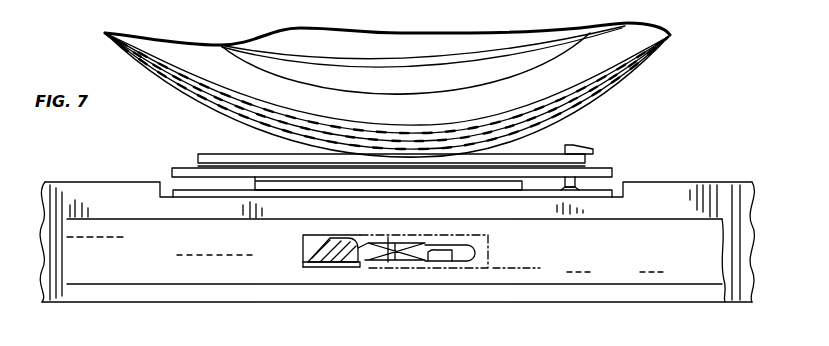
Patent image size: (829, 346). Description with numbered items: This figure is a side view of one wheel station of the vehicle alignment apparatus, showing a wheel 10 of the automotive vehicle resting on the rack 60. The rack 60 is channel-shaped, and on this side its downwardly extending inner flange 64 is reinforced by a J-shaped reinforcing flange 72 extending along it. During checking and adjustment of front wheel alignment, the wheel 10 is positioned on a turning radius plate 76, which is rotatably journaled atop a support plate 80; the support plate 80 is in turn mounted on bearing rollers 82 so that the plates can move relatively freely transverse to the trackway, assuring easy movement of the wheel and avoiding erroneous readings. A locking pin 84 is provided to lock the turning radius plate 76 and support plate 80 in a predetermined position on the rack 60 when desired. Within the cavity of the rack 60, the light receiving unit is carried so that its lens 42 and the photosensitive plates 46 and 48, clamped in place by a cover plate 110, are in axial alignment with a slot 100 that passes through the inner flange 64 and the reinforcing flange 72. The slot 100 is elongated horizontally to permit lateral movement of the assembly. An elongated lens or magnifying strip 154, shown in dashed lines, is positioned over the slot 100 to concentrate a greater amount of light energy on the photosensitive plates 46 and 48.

The wheel 10 is at (655, 63).
The turning radius plate 76 is at (221, 153).
The locking pin 84 is at (578, 150).
The support plate 80 is at (182, 169).
The bearing roller 82 is at (488, 178).
The rack 60 is at (713, 183).
The J-shaped reinforcing flange 72 is at (645, 302).
The inner flange 64 is at (735, 298).
The elongated lens strip 154 is at (305, 265).
The sensitive plate 48 is at (360, 265).
The lens 42 is at (400, 246).
The cover plate 110 is at (388, 236).
The sensitive plate 46 is at (450, 255).
The slot 100 is at (434, 255).